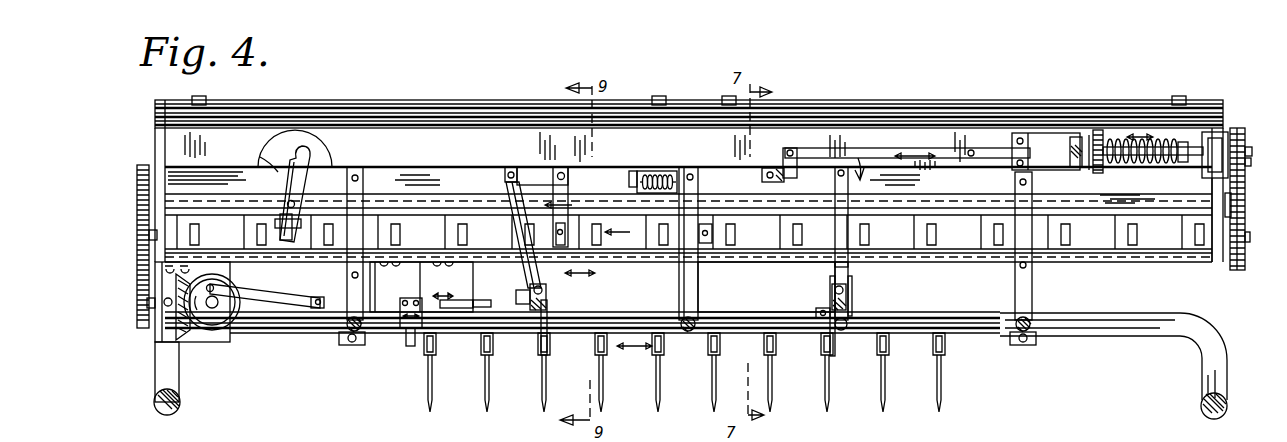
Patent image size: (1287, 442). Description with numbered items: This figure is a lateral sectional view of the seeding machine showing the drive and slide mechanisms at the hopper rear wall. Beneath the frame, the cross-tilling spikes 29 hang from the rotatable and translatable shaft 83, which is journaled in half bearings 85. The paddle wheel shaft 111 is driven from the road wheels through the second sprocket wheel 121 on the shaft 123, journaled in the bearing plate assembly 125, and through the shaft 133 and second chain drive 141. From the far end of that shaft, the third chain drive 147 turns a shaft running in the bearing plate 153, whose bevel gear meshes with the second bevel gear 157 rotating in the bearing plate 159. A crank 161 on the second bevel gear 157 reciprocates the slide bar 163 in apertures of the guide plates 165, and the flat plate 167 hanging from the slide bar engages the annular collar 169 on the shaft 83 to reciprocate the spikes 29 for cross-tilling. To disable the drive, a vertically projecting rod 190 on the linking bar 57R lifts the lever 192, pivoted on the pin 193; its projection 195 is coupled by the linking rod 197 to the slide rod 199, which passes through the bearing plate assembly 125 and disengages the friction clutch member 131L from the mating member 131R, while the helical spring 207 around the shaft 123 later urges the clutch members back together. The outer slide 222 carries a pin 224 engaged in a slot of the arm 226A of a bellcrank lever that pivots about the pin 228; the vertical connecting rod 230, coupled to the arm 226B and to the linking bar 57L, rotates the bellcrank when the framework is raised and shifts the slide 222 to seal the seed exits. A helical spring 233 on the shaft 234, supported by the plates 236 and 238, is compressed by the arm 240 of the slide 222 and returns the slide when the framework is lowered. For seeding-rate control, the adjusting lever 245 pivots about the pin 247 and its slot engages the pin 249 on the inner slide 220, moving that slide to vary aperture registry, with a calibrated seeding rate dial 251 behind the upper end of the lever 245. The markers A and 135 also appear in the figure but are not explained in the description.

The top rail A is at (831, 91).
The cross-tilling implements 29 is at (538, 388).
The linking bar 57L is at (548, 300).
The linking bar 57R is at (850, 302).
The shaft 83 is at (470, 336).
The half bearings 85 is at (348, 342).
The paddle wheel shaft 111 is at (1250, 242).
The second sprocket wheel 121 is at (1104, 172).
The shaft 123 is at (1078, 137).
The bearing plate assembly 125 is at (1048, 130).
The friction clutch member 131L is at (1205, 132).
The friction clutch member 131R is at (1236, 126).
The shaft 133 is at (1252, 148).
The pin 135 is at (1251, 162).
The second chain drive 141 is at (1246, 215).
The third chain drive 147 is at (136, 283).
The bearing plate 153 is at (158, 335).
The second bevel gear 157 is at (238, 318).
The bearing plate 159 is at (222, 276).
The crank 161 is at (281, 294).
The slide bar 163 is at (527, 300).
The guide plates 165 is at (378, 304).
The flat plate 167 is at (423, 298).
The annular collar 169 is at (410, 346).
The vertically projecting rod 190 is at (848, 272).
The lever 192 is at (815, 186).
The pin 193 is at (762, 176).
The projection 195 is at (784, 160).
The linking rod 197 is at (843, 165).
The slide rod 199 is at (996, 156).
The helical spring 207 is at (1155, 165).
The inner slide 220 is at (330, 262).
The outer slide 222 is at (632, 245).
The pin 224 is at (556, 247).
The downwardly extending arm 226A is at (572, 205).
The arm 226B is at (540, 175).
The pin 228 is at (566, 176).
The vertical connecting rod 230 is at (520, 207).
The helical spring 233 is at (662, 171).
The shaft 234 is at (634, 171).
The plate 236 is at (650, 192).
The plate 238 is at (696, 170).
The arm 240 is at (697, 204).
The adjusting lever 245 is at (310, 152).
The pin 247 is at (286, 204).
The pin 249 is at (296, 218).
The seeding rate dial 251 is at (277, 151).